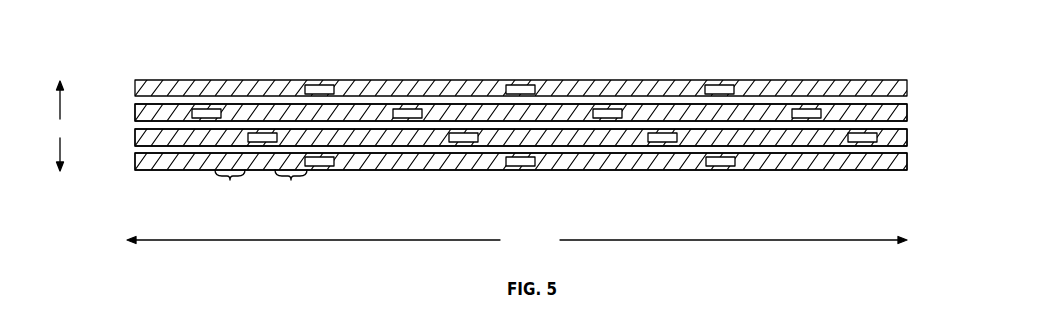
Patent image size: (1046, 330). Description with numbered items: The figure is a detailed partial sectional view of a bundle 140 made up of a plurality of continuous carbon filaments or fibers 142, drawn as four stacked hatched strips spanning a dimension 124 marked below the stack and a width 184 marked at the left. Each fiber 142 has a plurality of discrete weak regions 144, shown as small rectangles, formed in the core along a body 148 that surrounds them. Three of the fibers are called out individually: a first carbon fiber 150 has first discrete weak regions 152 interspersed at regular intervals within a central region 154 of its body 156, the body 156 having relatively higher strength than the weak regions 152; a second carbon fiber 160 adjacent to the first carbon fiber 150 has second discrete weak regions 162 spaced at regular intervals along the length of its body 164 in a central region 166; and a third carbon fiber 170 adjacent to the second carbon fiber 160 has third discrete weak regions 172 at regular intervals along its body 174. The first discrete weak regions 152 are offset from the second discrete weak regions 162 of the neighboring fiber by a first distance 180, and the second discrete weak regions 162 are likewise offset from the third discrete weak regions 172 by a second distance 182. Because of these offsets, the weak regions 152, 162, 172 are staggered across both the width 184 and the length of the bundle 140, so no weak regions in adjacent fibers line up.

The length of the heat exchanger stack 124 is at (517, 240).
The bundle 140 is at (523, 123).
The continuous carbon filaments 142 is at (907, 86).
The discrete weak regions 144 is at (318, 85).
The body 148 is at (422, 160).
The first carbon fiber 150 is at (135, 160).
The first discrete weak regions 152 is at (320, 157).
The central region 154 is at (764, 167).
The body 156 is at (800, 157).
The second carbon fiber 160 is at (135, 135).
The second discrete weak regions 162 is at (264, 133).
The body 164 is at (533, 138).
The central region 166 is at (358, 152).
The third carbon fiber 170 is at (135, 110).
The third discrete weak regions 172 is at (208, 109).
The body 174 is at (468, 117).
The first distance 180 is at (291, 180).
The second distance 182 is at (230, 180).
The width 184 is at (60, 126).